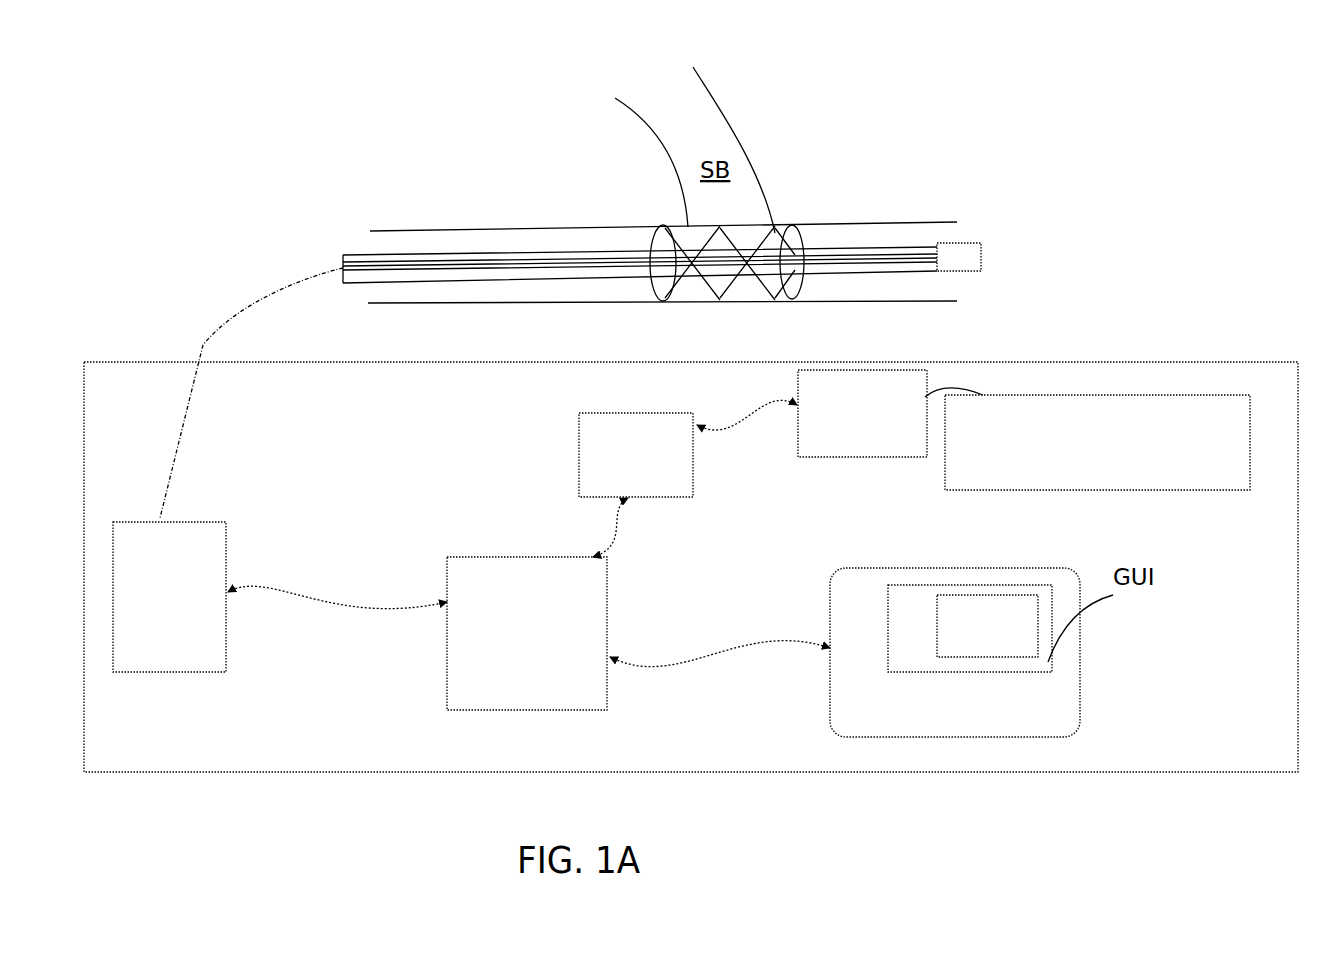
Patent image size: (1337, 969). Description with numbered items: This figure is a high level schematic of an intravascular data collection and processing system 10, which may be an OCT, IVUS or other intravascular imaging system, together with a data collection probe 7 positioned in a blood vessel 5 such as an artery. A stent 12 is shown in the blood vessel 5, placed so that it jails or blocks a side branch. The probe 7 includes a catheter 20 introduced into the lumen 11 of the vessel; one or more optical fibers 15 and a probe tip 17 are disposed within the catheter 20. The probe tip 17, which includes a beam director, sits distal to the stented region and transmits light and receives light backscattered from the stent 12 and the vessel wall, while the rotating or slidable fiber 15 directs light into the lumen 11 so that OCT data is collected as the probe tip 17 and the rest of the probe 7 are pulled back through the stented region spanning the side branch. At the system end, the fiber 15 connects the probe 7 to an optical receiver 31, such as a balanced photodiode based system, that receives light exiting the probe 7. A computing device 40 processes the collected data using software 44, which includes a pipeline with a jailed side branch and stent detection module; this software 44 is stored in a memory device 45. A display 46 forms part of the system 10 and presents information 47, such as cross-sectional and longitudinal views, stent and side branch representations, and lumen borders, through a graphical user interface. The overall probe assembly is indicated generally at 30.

The blood vessel 5 is at (543, 222).
The data collection probe 7 is at (890, 262).
The intravascular data collection and processing system 10 is at (1135, 363).
The lumen 11 is at (463, 233).
The stent 12 is at (773, 250).
The optical fiber 15 is at (240, 313).
The probe tip 17 is at (935, 256).
The catheter 20 is at (982, 257).
The catheter assembly 30 is at (306, 130).
The optical receiver 31 is at (169, 597).
The computing device 40 is at (497, 556).
The software 44 is at (1024, 430).
The memory device 45 is at (587, 420).
The display 46 is at (878, 568).
The information 47 is at (970, 628).